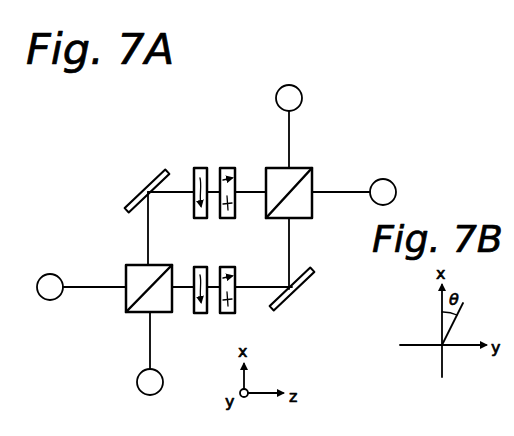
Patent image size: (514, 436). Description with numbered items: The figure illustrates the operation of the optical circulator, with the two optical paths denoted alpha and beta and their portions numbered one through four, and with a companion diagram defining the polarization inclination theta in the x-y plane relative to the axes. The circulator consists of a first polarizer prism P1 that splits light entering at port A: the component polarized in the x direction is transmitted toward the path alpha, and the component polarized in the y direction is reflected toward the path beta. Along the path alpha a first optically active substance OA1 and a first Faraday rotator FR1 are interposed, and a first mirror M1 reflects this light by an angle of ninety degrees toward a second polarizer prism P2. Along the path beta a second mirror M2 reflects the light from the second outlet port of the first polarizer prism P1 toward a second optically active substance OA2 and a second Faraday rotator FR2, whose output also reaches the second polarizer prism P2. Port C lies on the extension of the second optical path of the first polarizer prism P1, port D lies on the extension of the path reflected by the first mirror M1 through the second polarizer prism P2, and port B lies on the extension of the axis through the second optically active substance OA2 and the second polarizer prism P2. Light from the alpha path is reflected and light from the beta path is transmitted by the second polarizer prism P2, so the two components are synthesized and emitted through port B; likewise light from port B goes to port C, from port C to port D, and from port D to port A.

The port A is at (81, 287).
The port B is at (354, 192).
The port C is at (150, 353).
The port D is at (289, 126).
The first polarizer prism P1 is at (126, 298).
The second polarizer prism P2 is at (292, 168).
The first mirror M1 is at (297, 297).
The second mirror M2 is at (150, 184).
The first optically active substance OA1 is at (193, 273).
The second optically active substance OA2 is at (193, 216).
The first Faraday rotator FR1 is at (237, 274).
The second Faraday rotator FR2 is at (237, 216).